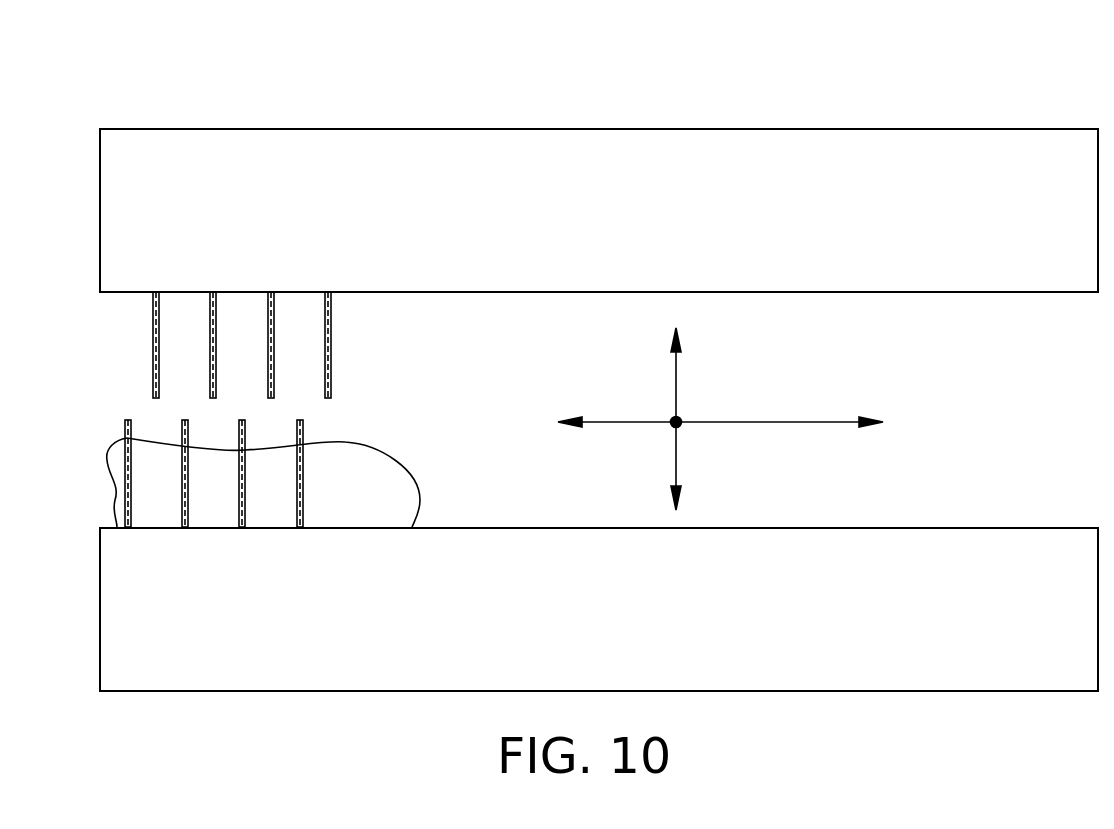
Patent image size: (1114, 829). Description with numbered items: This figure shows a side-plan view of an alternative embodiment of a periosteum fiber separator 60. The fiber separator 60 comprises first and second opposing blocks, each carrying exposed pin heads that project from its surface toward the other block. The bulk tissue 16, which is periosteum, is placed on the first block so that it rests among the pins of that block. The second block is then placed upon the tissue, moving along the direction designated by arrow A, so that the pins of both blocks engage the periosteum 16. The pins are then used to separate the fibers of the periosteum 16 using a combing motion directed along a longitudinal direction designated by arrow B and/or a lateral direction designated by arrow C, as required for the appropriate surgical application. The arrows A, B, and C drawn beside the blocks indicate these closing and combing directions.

The fiber separator 60 is at (216, 97).
The bulk tissue 16 is at (153, 452).